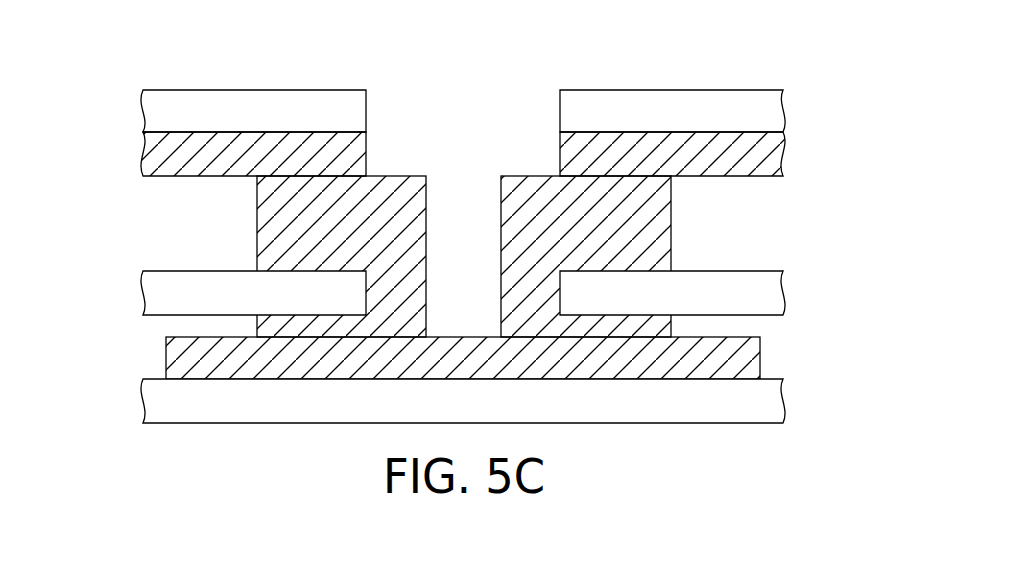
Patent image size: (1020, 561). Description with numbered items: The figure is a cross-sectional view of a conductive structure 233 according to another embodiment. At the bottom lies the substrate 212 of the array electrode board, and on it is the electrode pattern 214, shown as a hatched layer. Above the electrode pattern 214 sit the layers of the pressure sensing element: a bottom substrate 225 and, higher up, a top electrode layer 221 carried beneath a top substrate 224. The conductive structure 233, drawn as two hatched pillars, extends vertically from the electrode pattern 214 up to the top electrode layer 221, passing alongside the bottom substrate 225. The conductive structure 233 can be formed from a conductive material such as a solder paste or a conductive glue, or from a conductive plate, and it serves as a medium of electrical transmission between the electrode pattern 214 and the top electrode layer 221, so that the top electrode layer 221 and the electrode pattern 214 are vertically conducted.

The substrate 212 is at (760, 402).
The electrode pattern 214 is at (750, 362).
The top electrode layer 221 is at (762, 154).
The top substrate 224 is at (760, 110).
The bottom substrate 225 is at (760, 294).
The conductive structure 233 is at (658, 218).